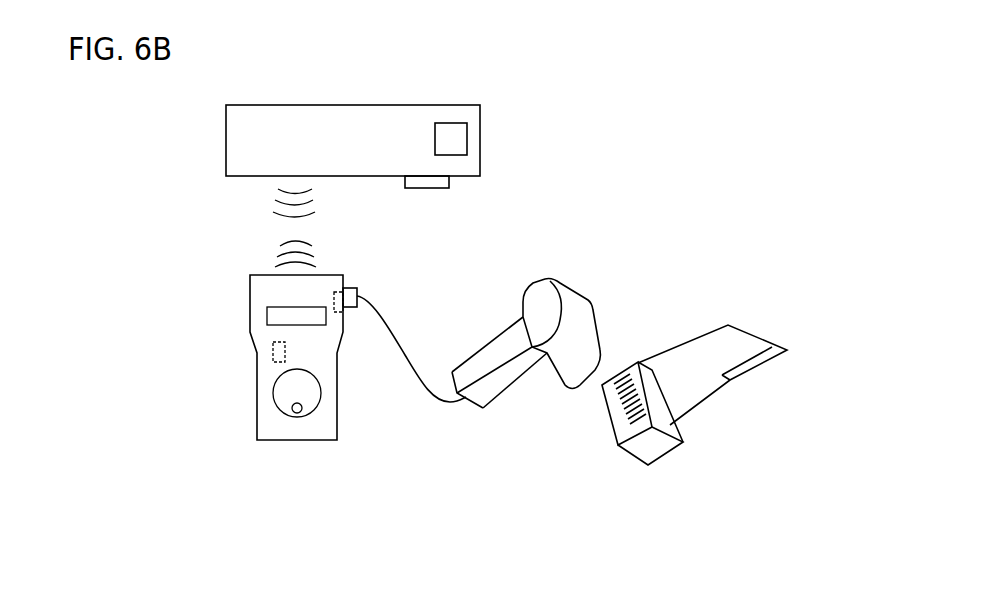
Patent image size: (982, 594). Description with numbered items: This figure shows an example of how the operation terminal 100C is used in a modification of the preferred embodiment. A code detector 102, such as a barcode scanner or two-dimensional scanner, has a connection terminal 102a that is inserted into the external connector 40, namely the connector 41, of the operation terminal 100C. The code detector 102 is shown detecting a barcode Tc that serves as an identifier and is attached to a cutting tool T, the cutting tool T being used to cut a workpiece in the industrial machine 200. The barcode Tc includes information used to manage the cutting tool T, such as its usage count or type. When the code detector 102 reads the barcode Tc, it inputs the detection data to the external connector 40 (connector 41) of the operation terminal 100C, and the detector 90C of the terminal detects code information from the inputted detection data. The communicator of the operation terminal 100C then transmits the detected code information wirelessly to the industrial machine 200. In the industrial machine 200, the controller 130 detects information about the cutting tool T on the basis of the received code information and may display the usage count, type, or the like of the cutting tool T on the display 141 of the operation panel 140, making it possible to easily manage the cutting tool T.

The industrial machine 200 is at (225, 138).
The controller 130 is at (460, 138).
The display 141 is at (442, 182).
The operation panel 140 is at (427, 182).
The operation terminal 100C is at (240, 324).
The detector 90C is at (272, 353).
The connection terminal 102a is at (344, 288).
The connector 41 is at (346, 327).
The external connector 40 is at (340, 342).
The code detector 102 is at (545, 280).
The cutting tool T is at (725, 338).
The barcode Tc is at (617, 403).